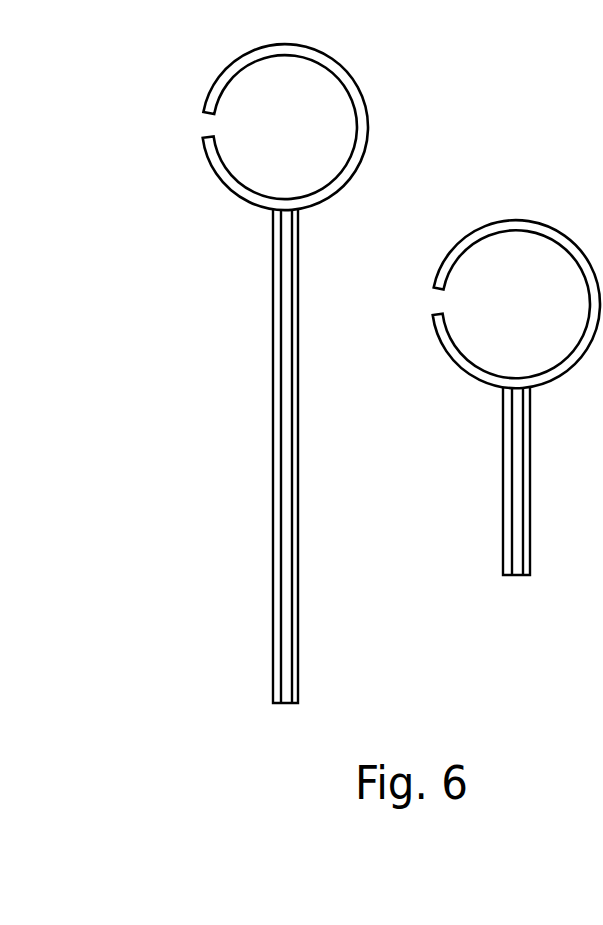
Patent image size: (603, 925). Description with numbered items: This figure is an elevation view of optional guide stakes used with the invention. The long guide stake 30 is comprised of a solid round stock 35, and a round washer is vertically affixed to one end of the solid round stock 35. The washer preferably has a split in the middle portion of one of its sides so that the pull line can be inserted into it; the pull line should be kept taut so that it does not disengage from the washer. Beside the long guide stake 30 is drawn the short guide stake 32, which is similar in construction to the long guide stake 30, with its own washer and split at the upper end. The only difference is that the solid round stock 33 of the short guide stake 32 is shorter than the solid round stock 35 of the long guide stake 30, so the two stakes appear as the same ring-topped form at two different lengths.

The long guide stake 30 is at (277, 373).
The short guide stake 32 is at (478, 374).
The solid round stock 33 is at (487, 430).
The solid round stock 35 is at (263, 322).